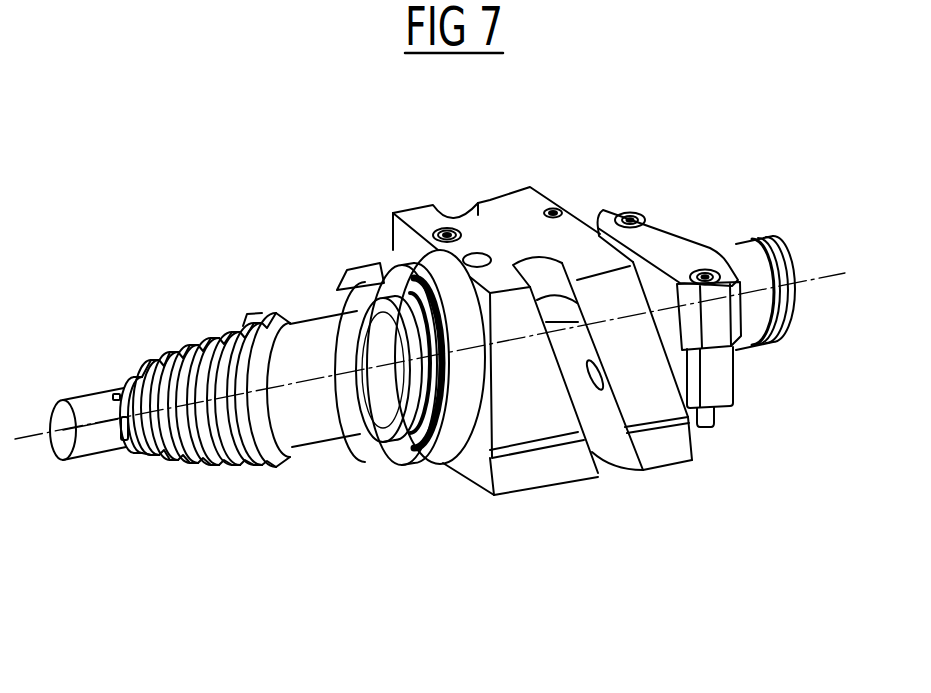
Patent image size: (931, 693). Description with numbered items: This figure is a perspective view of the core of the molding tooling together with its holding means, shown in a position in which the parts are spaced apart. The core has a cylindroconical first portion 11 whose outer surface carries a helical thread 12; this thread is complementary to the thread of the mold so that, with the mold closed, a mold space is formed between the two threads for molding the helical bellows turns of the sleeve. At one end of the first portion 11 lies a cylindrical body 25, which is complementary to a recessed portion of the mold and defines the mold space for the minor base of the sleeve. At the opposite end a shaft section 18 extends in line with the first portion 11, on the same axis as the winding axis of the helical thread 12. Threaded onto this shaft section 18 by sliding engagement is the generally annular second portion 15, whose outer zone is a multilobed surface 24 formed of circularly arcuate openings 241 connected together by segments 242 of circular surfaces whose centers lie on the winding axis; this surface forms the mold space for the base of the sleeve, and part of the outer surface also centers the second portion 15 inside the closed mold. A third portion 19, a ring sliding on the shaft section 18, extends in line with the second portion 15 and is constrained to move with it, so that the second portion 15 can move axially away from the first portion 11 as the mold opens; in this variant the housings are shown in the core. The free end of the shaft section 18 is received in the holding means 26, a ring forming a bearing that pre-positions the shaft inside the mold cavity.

The first portion 11 is at (238, 462).
The helical thread 12 is at (165, 342).
The second portion 15 is at (350, 281).
The shaft section 18 is at (330, 332).
The third portion 19 is at (653, 450).
The multilobed surface 24 is at (363, 470).
The circularly arcuate openings 241 is at (383, 292).
The segments of circular surfaces 242 is at (409, 345).
The cylindrical body 25 is at (83, 402).
The holding means 26 is at (652, 235).